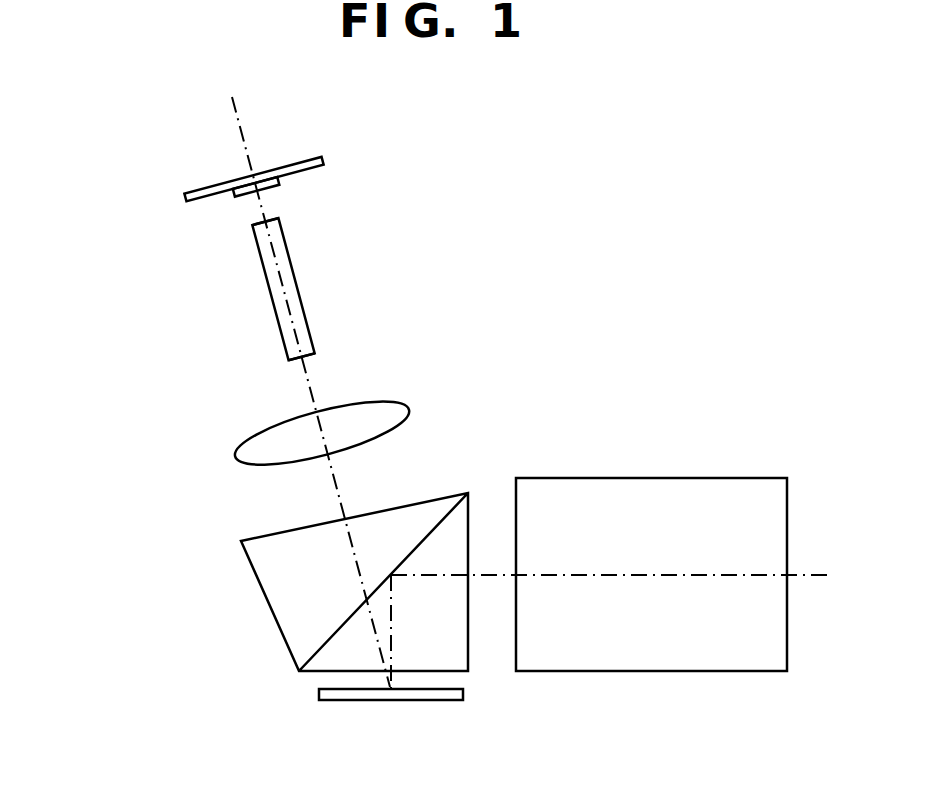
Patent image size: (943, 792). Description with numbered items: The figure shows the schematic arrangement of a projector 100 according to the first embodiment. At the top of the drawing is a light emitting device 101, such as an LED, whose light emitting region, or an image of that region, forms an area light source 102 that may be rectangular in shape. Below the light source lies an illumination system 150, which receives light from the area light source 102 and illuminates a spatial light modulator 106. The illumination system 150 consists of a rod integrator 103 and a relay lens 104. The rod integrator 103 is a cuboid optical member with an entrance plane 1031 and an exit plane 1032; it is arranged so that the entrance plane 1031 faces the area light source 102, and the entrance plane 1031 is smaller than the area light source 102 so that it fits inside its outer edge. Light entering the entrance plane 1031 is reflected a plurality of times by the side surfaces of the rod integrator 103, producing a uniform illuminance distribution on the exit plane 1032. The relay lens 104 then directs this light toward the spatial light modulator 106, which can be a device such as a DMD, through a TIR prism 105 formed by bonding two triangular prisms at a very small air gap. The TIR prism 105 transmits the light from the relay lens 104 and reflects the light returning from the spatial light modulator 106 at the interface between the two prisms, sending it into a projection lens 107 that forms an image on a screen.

The projector 100 is at (532, 393).
The light emitting device 101 is at (255, 142).
The area light source 102 is at (314, 200).
The rod integrator 103 is at (206, 320).
The entrance plane 1031 is at (204, 222).
The exit plane 1032 is at (274, 389).
The relay lens 104 is at (261, 420).
The TIR prism 105 is at (321, 582).
The spatial light modulator 106 is at (403, 725).
The projection lens 107 is at (651, 542).
The illumination system 150 is at (207, 339).